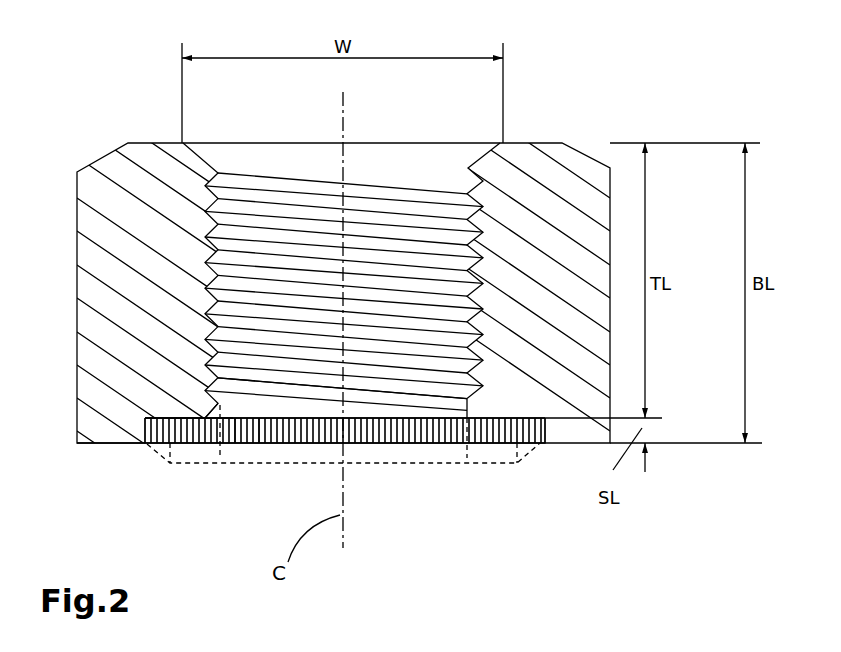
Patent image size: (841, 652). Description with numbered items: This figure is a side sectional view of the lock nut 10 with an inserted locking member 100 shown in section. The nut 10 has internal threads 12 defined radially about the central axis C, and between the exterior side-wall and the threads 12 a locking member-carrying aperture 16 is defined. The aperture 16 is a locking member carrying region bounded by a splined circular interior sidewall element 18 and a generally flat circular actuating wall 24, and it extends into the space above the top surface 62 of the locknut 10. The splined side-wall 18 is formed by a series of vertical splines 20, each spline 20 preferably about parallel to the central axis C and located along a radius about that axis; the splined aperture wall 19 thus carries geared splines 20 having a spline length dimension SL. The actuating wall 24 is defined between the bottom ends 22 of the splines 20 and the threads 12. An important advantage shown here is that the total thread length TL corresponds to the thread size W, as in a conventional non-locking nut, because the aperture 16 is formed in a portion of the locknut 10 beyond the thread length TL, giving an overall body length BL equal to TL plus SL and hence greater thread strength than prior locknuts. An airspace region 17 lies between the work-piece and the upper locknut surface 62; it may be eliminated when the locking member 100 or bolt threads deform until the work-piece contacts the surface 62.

The lock nut 10 is at (103, 195).
The threads 12 is at (485, 180).
The locking member-carrying aperture 16 is at (200, 407).
The airspace region 17 is at (425, 400).
The splined circular interior sidewall element 18 is at (145, 436).
The splined aperture wall 19 is at (407, 436).
The splines 20 is at (257, 438).
The bottom ends of the splines 22 is at (143, 419).
The actuating wall 24 is at (165, 413).
The top surface of the locknut 62 is at (122, 446).
The locking member 100 is at (170, 464).